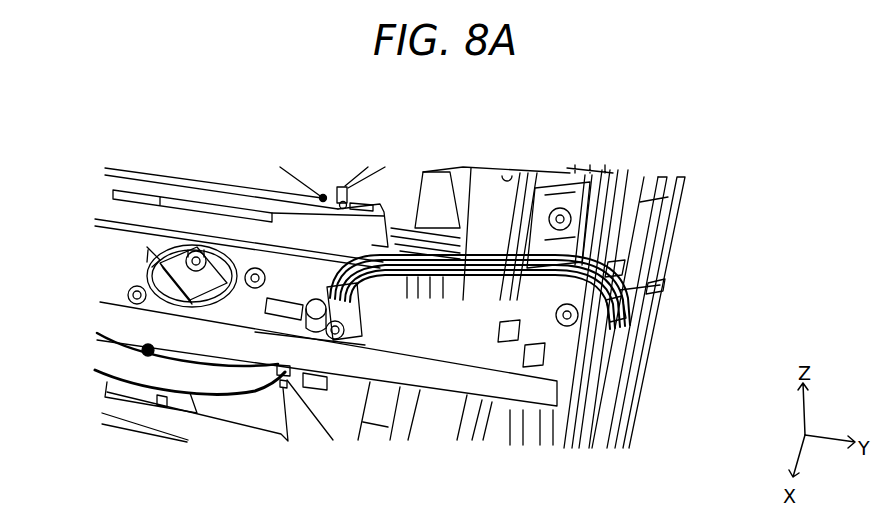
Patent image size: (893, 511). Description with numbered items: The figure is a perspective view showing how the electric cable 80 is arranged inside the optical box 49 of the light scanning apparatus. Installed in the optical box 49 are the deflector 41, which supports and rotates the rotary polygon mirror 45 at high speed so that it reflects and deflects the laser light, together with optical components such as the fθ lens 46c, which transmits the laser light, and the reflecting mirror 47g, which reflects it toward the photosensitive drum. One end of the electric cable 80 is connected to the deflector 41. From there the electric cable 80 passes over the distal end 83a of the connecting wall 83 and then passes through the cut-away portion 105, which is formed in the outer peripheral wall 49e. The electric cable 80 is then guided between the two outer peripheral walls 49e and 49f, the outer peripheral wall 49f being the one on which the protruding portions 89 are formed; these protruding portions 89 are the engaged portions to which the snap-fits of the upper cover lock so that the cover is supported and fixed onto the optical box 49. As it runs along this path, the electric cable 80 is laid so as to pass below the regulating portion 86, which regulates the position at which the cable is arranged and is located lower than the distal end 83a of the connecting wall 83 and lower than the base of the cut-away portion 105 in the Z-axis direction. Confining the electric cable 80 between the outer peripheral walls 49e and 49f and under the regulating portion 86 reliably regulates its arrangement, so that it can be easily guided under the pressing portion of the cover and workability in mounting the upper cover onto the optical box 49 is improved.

The deflector 41 is at (322, 198).
The rotary polygon mirror 45 is at (150, 265).
The reflecting mirror 47g is at (112, 313).
The fθ lens 46c is at (122, 370).
The electric cable 80 is at (452, 262).
The connecting wall 83 is at (537, 186).
The distal end 83a is at (585, 200).
The outer peripheral wall 49e is at (634, 172).
The outer peripheral wall 49f is at (663, 178).
The optical box 49 is at (632, 405).
The cut-away portion 105 is at (615, 268).
The protruding portion 89 is at (658, 281).
The regulating portion 86 is at (612, 314).